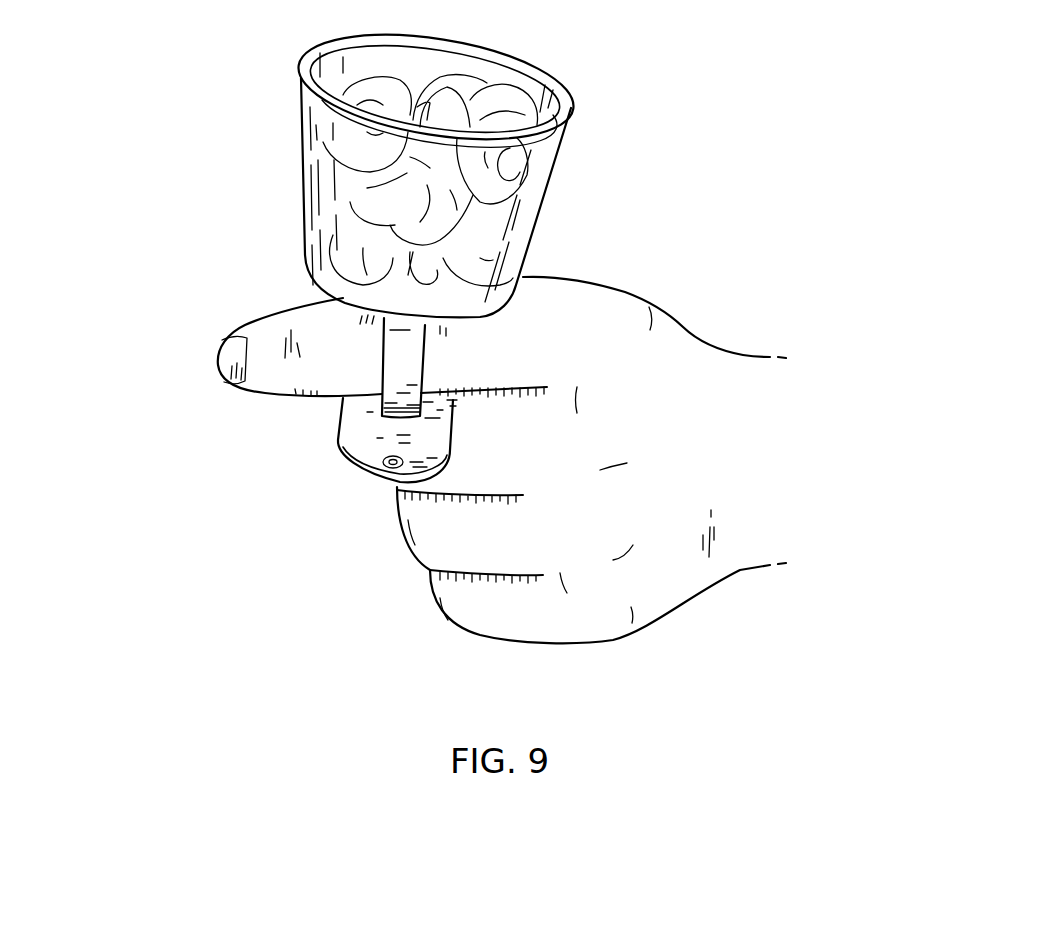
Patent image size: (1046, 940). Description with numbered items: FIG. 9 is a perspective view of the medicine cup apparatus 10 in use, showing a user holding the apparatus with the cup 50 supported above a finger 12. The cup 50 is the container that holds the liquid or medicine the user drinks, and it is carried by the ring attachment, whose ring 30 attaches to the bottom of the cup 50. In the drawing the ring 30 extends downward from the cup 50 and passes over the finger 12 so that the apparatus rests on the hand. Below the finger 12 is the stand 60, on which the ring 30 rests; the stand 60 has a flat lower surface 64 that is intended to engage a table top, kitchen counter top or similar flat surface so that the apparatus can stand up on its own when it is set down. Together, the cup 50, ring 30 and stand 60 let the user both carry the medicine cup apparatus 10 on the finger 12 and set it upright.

The medicine cup apparatus 10 is at (220, 272).
The finger 12 is at (332, 347).
The ring 30 is at (400, 370).
The cup 50 is at (540, 165).
The stand 60 is at (350, 437).
The flat lower surface 64 is at (357, 470).